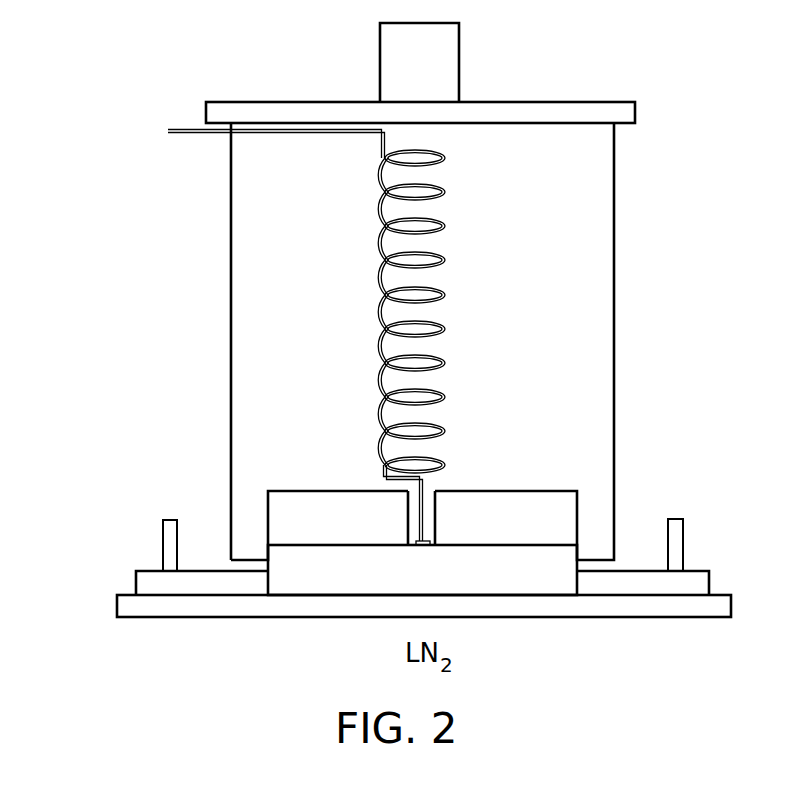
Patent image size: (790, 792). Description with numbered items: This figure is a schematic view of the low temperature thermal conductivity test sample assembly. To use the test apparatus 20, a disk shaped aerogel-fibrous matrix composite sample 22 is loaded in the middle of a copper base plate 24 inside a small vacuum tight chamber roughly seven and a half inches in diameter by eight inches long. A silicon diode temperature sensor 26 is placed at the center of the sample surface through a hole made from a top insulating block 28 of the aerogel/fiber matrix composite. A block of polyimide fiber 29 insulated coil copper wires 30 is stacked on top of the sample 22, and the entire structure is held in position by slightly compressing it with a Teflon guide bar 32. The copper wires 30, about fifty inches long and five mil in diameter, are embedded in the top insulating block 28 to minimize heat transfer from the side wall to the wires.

The test apparatus 20 is at (230, 337).
The aerogel-fibrous matrix composite sample 22 is at (291, 583).
The copper base plate 24 is at (115, 605).
The silicon diode temperature sensor 26 is at (426, 547).
The top insulating block 28 is at (302, 497).
The polyimide fiber 29 is at (245, 273).
The coil copper wires 30 is at (446, 228).
The Teflon guide bar 32 is at (491, 102).